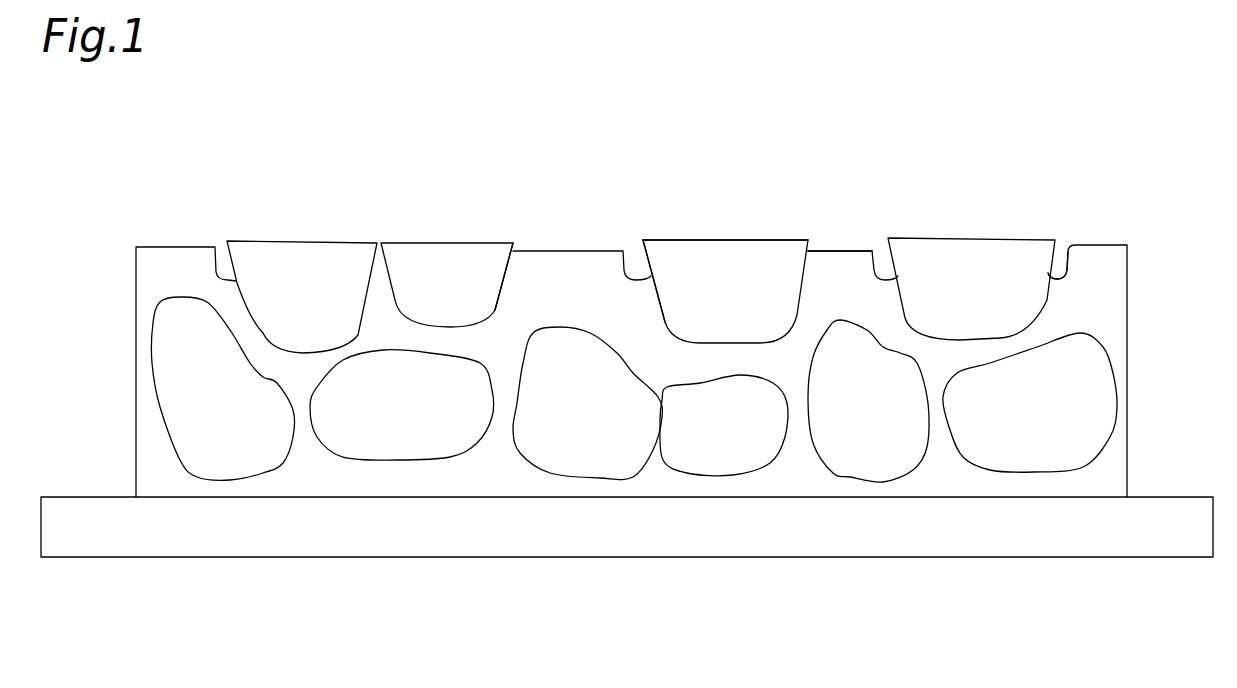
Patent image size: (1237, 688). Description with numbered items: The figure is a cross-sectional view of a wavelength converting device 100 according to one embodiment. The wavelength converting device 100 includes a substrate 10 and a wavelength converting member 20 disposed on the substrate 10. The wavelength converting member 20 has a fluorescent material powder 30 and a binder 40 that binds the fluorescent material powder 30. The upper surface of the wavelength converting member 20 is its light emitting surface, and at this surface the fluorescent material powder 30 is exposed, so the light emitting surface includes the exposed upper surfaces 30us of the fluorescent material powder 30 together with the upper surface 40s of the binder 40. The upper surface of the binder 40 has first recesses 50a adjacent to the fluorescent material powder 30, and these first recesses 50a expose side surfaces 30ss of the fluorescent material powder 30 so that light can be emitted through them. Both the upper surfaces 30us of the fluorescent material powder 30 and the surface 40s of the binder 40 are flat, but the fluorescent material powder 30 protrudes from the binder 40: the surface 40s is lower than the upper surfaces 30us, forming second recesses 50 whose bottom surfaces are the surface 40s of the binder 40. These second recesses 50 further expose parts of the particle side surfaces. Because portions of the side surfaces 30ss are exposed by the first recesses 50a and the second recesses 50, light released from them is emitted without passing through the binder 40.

The substrate 10 is at (1097, 548).
The wavelength converting member 20 is at (1167, 245).
The fluorescent material powder 30 is at (743, 248).
The upper surfaces of the fluorescent material powder 30us is at (703, 240).
The side surfaces of the fluorescent material powder 30ss is at (518, 242).
The binder 40 is at (843, 253).
The surface of the binder 40s is at (818, 252).
The second recesses 50 is at (622, 202).
The first recesses 50a is at (883, 253).
The wavelength converting device 100 is at (1072, 180).